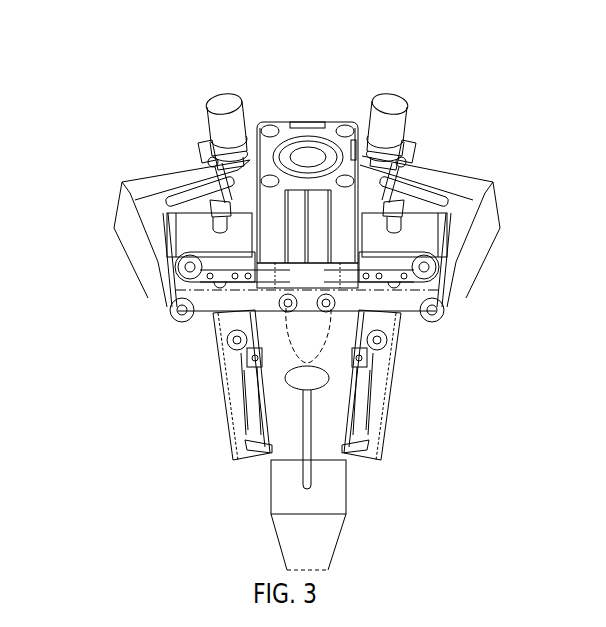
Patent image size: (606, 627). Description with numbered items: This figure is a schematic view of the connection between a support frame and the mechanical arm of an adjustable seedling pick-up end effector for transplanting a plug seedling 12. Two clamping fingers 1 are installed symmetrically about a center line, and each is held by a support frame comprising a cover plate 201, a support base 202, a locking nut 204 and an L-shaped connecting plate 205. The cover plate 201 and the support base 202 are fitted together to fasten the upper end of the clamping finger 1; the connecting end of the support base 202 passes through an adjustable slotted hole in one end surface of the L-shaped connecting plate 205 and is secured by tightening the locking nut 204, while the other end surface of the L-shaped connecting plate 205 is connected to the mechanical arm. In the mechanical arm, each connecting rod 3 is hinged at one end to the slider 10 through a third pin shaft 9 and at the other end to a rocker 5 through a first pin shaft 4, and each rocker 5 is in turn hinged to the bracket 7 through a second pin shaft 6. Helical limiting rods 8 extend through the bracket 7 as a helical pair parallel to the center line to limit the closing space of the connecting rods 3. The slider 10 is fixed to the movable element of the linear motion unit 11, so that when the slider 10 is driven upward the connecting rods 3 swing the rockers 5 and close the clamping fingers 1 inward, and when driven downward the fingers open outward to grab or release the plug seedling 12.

The clamping finger 1 is at (228, 127).
The cover plate 201 is at (206, 149).
The support base 202 is at (213, 162).
The locking nut 204 is at (220, 189).
The L-shaped connecting plate 205 is at (135, 249).
The second pin shaft 6 is at (190, 267).
The rocker 5 is at (168, 298).
The first pin shaft 4 is at (182, 312).
The connecting rod 3 is at (248, 302).
The helical limiting rod 8 is at (225, 206).
The bracket 7 is at (225, 258).
The third pin shaft 9 is at (345, 239).
The linear motion unit 11 is at (311, 276).
The slider 10 is at (335, 290).
The plug seedling 12 is at (310, 498).